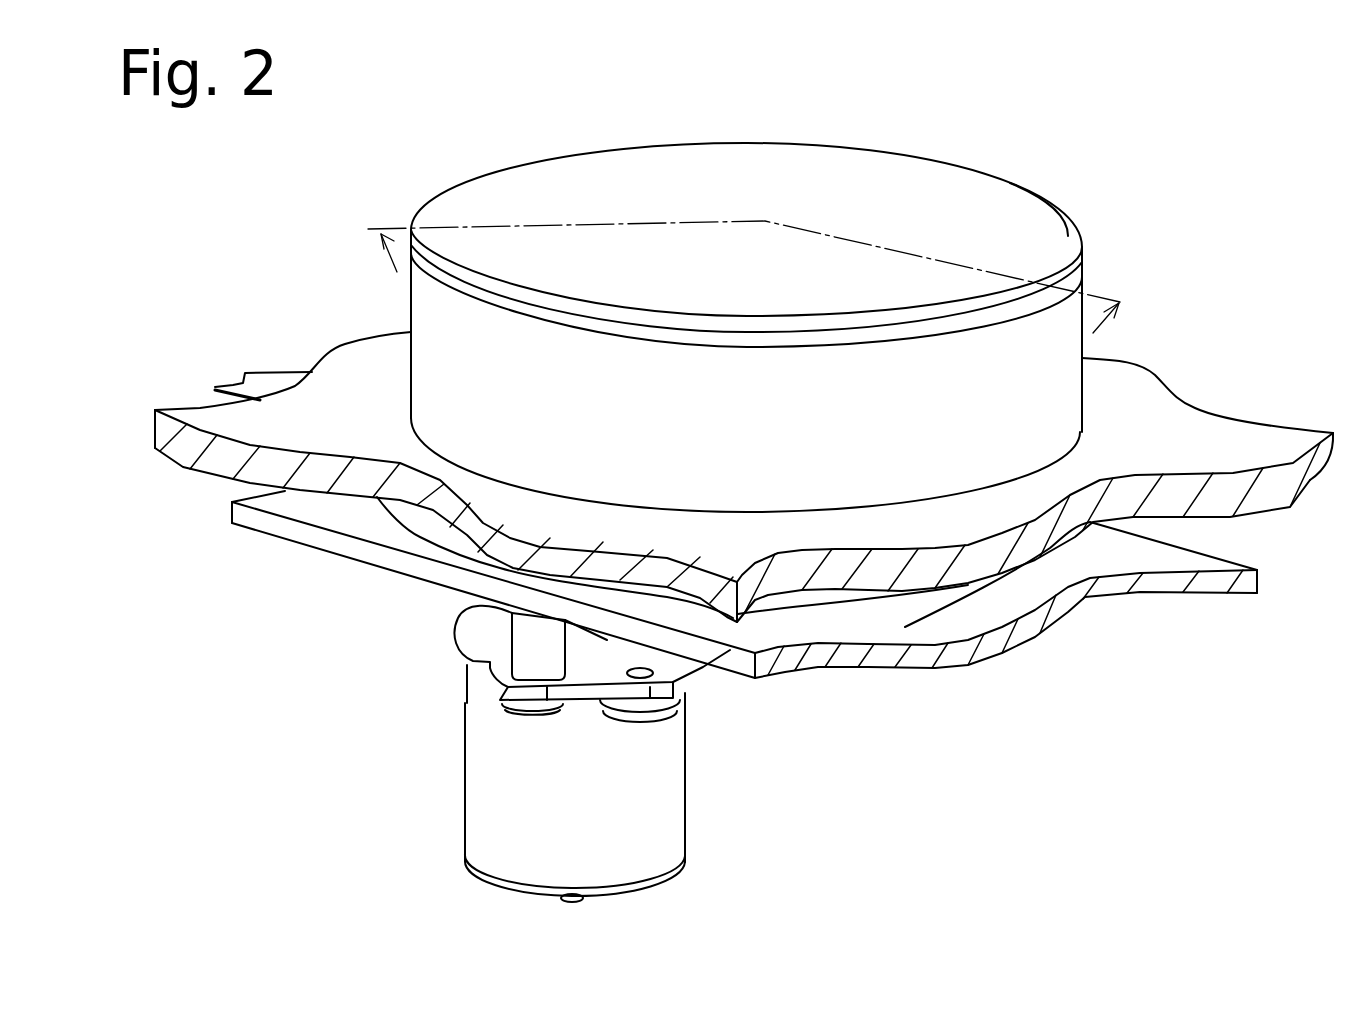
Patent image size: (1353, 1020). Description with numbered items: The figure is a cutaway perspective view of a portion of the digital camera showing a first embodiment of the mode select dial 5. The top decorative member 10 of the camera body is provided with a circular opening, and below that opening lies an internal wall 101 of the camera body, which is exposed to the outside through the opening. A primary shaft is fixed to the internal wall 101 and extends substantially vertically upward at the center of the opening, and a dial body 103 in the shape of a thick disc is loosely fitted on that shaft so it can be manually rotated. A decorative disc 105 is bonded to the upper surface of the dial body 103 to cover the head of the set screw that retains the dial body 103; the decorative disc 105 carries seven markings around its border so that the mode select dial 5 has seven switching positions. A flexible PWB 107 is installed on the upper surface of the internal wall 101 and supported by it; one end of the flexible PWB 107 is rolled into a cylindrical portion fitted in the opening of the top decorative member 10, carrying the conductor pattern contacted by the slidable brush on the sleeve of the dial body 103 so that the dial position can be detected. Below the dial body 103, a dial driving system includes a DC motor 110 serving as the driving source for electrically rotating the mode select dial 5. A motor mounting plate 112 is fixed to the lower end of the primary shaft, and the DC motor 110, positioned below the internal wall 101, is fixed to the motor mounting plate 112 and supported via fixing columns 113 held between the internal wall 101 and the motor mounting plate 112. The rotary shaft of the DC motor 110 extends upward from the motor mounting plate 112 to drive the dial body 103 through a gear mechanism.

The mode select dial 5 is at (769, 132).
The decorative disc 105 is at (1016, 221).
The flexible PWB 107 is at (270, 383).
The top decorative member 10 is at (1206, 438).
The dial body 103 is at (1017, 432).
The internal wall 101 is at (1197, 589).
The motor mounting plate 112 is at (478, 616).
The fixing columns 113 is at (528, 660).
The DC motor 110 is at (674, 798).